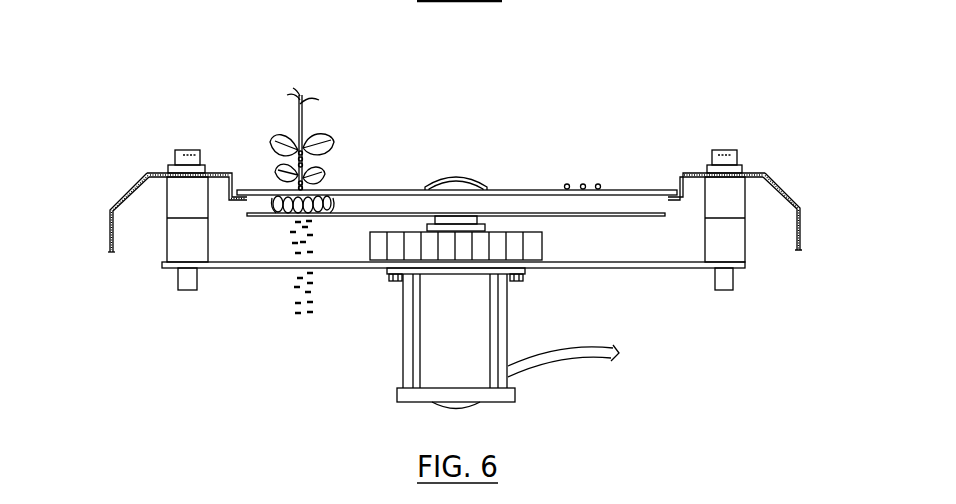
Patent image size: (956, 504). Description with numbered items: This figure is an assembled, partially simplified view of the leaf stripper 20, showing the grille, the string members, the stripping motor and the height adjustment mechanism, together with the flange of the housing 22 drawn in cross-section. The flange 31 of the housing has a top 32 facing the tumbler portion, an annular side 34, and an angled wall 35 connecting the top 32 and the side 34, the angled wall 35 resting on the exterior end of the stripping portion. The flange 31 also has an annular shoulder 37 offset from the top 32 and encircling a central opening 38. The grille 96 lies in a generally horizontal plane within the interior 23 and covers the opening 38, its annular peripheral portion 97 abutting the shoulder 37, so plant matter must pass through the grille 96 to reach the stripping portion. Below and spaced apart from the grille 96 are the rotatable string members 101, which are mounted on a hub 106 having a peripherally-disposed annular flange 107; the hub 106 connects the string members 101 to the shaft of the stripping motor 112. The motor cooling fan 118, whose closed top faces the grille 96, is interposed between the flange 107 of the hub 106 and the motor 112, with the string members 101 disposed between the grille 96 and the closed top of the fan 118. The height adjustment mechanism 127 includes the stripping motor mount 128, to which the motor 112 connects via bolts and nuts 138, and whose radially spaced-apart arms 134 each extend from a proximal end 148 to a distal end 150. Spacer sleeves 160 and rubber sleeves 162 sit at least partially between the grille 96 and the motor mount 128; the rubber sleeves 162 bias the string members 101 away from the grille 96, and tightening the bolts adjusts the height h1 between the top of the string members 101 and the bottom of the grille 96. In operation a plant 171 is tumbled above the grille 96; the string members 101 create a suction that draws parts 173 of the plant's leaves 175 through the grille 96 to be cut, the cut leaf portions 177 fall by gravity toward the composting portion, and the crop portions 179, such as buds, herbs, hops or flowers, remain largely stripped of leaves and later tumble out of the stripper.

The leaf stripper 20 is at (93, 68).
The housing 22 is at (100, 229).
The interior 23 is at (263, 332).
The flange 31 is at (108, 214).
The top 32 is at (156, 173).
The annular side 34 is at (110, 240).
The angled wall 35 is at (138, 173).
The annular shoulder 37 is at (237, 188).
The central opening 38 is at (246, 206).
The grille 96 is at (340, 187).
The annular peripheral portion 97 is at (248, 188).
The string member 101 is at (257, 216).
The hub 106 is at (452, 212).
The annular flange 107 is at (487, 228).
The stripping motor 112 is at (472, 347).
The motor cooling fan 118 is at (548, 238).
The height adjustment mechanism 127 is at (758, 195).
The stripping motor mount 128 is at (637, 272).
The arms 134 is at (665, 250).
The nuts 138 is at (514, 282).
The proximal end 148 is at (550, 268).
The distal end 150 is at (740, 272).
The spacer sleeves 160 is at (748, 245).
The rubber sleeves 162 is at (745, 212).
The plant 171 is at (332, 116).
The parts of the plant's leaves 173 is at (337, 203).
The leaves 175 is at (328, 143).
The leaf portions 177 is at (313, 310).
The crop portions 179 is at (599, 183).
The height h1 is at (365, 234).